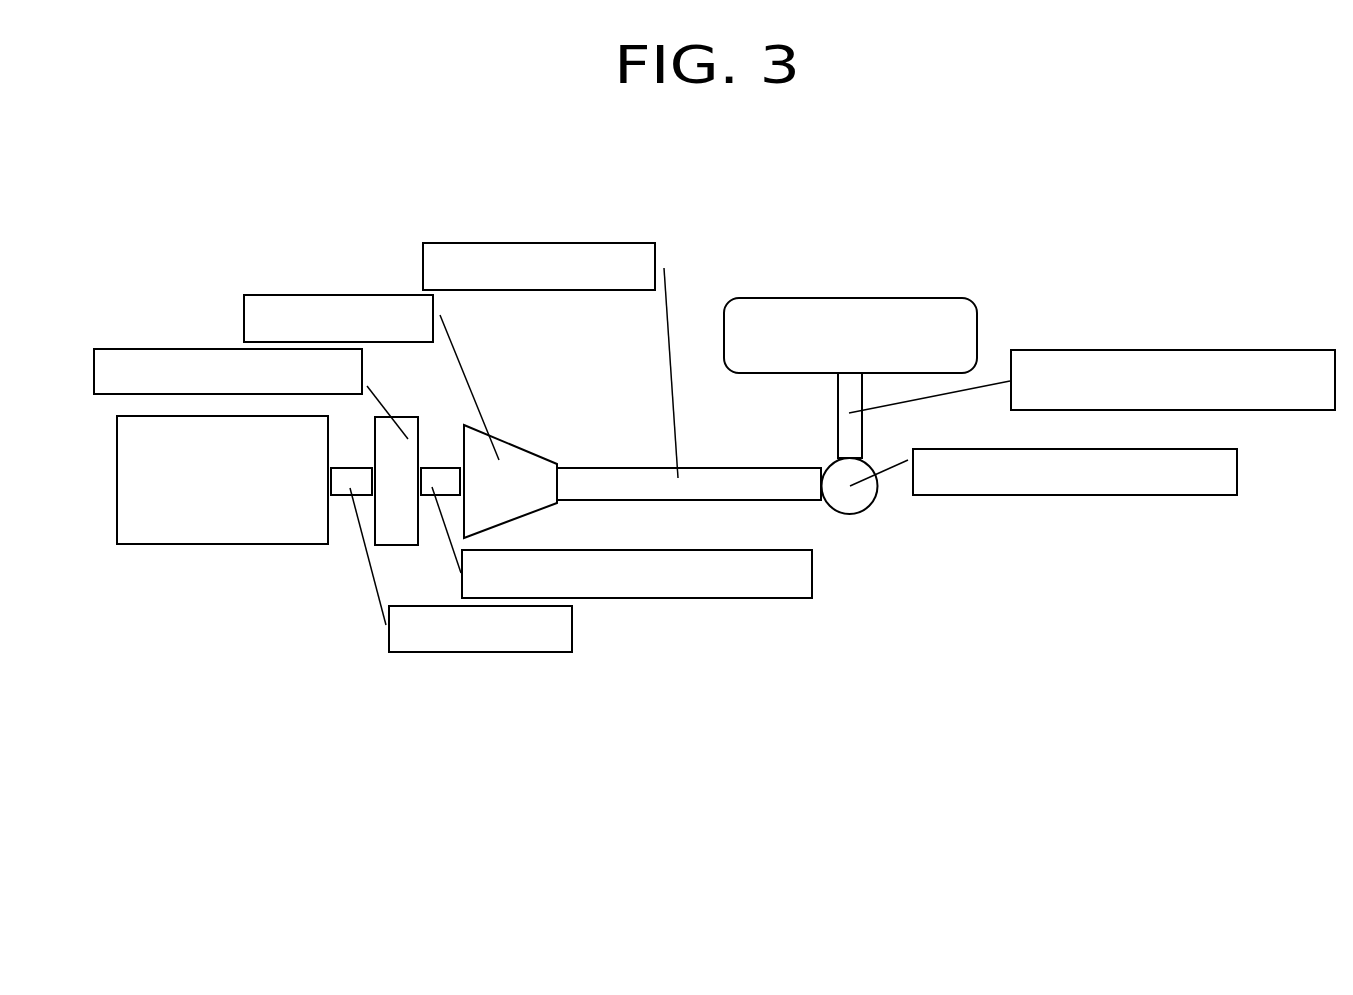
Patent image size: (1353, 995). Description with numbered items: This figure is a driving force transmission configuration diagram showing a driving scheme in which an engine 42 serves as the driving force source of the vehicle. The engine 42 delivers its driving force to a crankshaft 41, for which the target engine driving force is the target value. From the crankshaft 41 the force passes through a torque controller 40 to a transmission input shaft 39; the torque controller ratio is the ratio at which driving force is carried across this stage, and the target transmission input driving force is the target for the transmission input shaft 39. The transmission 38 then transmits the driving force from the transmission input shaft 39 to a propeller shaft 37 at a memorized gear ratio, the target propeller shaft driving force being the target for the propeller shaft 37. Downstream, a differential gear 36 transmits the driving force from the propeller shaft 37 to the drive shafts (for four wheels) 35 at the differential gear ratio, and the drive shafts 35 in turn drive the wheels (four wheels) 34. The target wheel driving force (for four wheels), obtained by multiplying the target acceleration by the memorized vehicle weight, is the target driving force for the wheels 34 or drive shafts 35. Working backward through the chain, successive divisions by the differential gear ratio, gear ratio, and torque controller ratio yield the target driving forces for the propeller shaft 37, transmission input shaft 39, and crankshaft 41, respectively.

The wheels (four wheels) 34 is at (845, 297).
The drive shafts (for four wheels) 35 is at (1166, 350).
The differential gear 36 is at (1238, 468).
The propeller shaft 37 is at (537, 243).
The transmission 38 is at (341, 294).
The transmission input shaft 39 is at (743, 550).
The torque controller 40 is at (212, 347).
The crankshaft 41 is at (573, 627).
The engine 42 is at (117, 463).